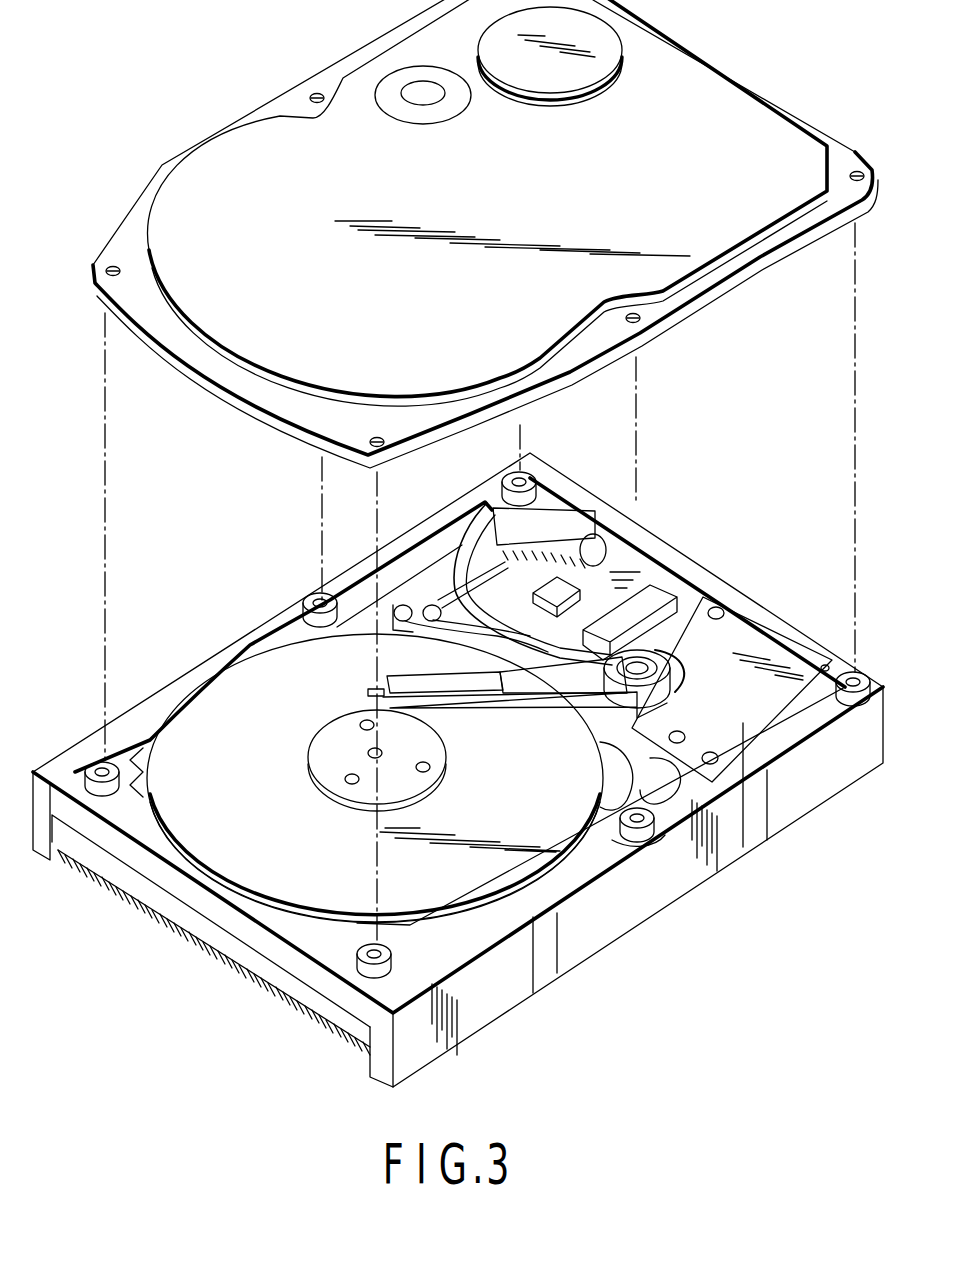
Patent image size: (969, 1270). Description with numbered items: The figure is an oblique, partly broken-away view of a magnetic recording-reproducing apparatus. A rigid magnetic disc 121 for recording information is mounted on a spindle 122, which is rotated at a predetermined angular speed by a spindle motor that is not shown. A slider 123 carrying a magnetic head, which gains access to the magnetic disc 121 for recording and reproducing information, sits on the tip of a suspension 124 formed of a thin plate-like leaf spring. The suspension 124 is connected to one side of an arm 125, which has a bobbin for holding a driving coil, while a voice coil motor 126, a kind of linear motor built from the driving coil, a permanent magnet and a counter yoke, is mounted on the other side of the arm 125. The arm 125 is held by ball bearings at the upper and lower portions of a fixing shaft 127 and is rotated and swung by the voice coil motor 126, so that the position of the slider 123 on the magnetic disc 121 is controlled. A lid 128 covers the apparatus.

The magnetic disc 121 is at (218, 703).
The spindle 122 is at (317, 750).
The slider 123 is at (380, 690).
The suspension 124 is at (455, 690).
The arm 125 is at (548, 708).
The voice coil motor 126 is at (750, 642).
The fixing shaft 127 is at (653, 673).
The lid 128 is at (753, 114).